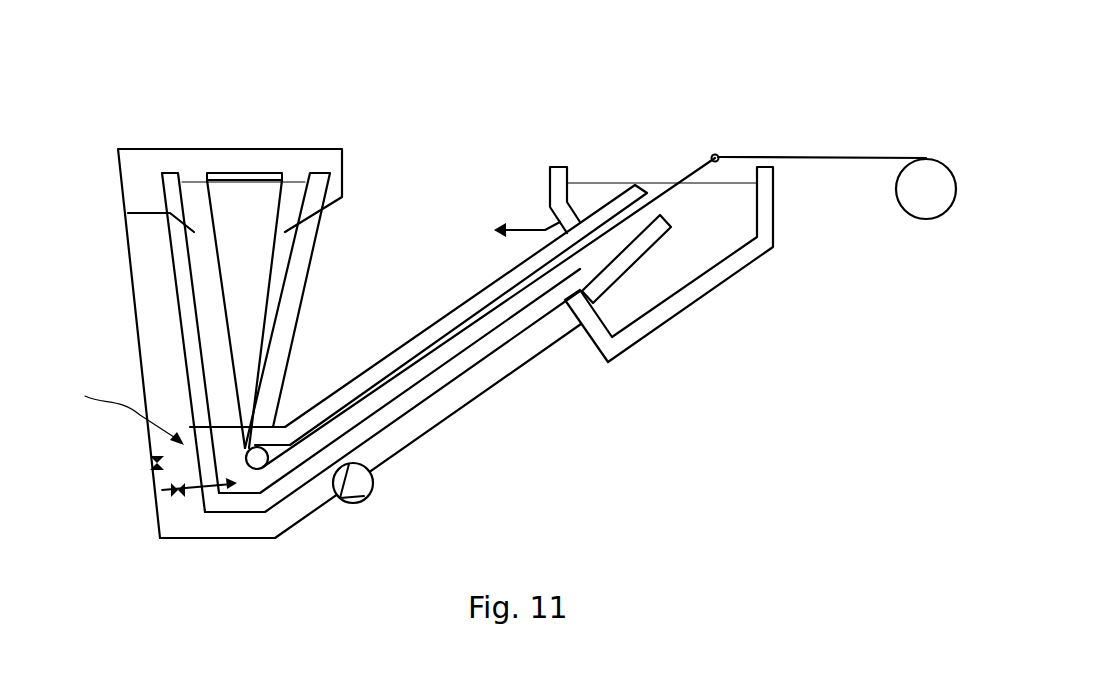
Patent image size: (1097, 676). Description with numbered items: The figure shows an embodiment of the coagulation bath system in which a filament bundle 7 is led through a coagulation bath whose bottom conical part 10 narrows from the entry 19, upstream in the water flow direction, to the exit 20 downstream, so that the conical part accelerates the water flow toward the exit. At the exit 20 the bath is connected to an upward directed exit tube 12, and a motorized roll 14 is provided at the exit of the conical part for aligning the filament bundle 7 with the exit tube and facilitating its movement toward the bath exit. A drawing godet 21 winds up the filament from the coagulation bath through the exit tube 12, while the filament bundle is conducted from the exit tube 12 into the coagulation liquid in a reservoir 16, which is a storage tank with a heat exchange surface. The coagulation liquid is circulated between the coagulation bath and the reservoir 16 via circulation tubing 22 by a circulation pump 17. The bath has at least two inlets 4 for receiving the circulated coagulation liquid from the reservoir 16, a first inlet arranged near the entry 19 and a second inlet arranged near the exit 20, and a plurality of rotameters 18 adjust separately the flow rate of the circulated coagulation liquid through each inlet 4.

The water circulation inlet 4 is at (139, 408).
The filament bundle 7 is at (177, 310).
The bottom conical part 10 is at (272, 342).
The exit tube straight section 12 is at (452, 312).
The guide roll for filament alignment with exit tube 14 is at (282, 535).
The storage tank with heat exchange surface 16 is at (633, 310).
The circulation pump 17 is at (418, 497).
The rotameter 18 is at (126, 502).
The entry 19 is at (274, 313).
The exit 20 is at (115, 412).
The drawing godet 21 is at (834, 120).
The circulation tubing 22 is at (370, 403).